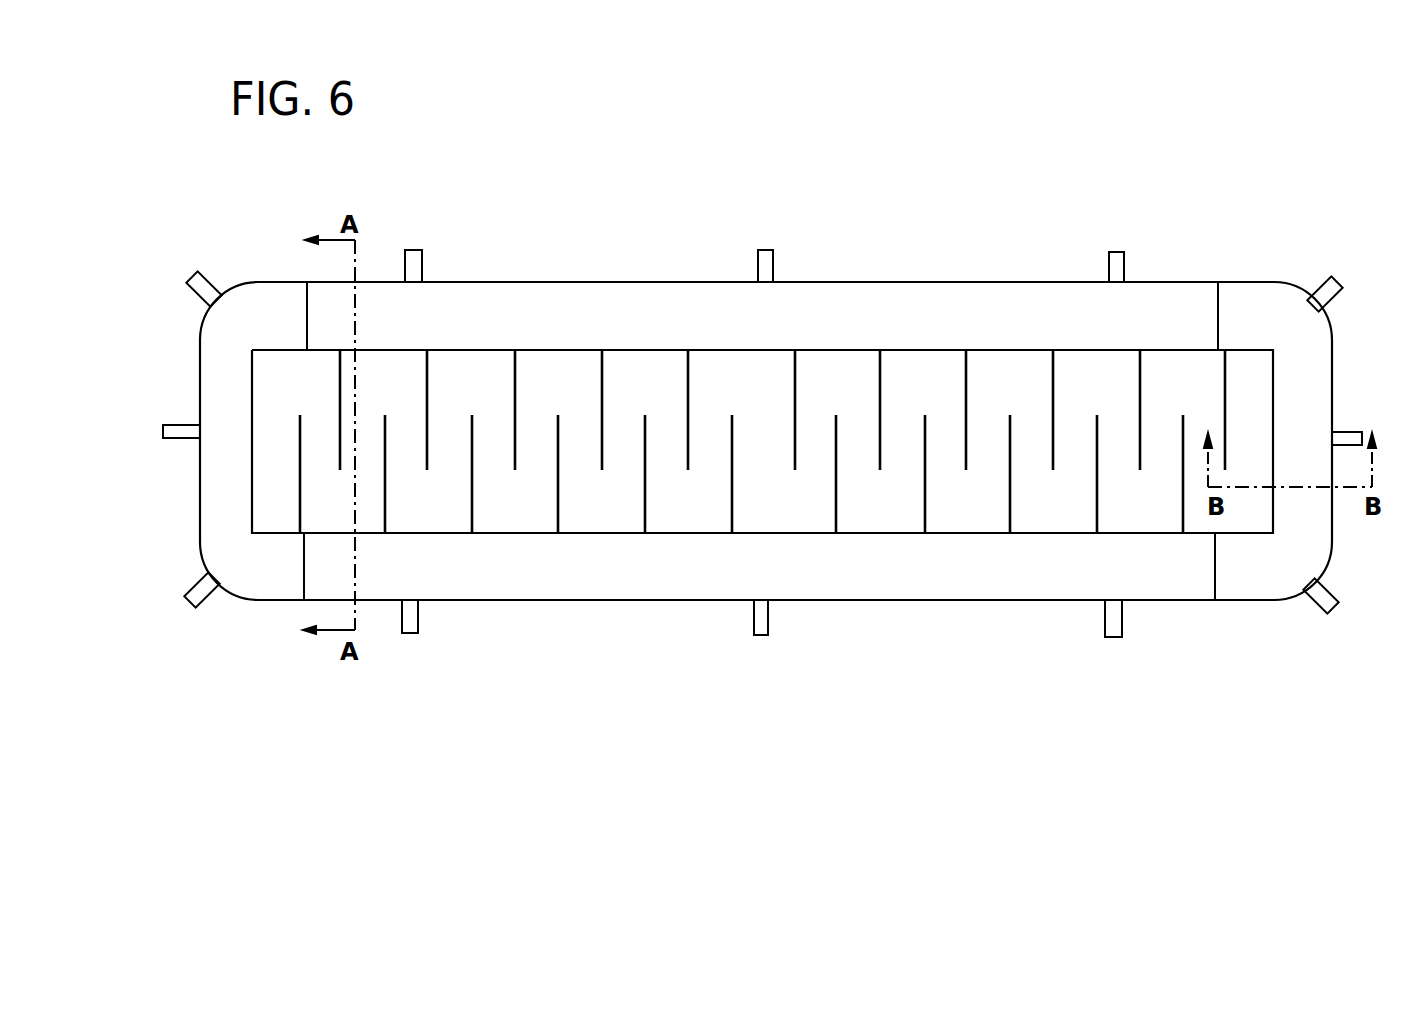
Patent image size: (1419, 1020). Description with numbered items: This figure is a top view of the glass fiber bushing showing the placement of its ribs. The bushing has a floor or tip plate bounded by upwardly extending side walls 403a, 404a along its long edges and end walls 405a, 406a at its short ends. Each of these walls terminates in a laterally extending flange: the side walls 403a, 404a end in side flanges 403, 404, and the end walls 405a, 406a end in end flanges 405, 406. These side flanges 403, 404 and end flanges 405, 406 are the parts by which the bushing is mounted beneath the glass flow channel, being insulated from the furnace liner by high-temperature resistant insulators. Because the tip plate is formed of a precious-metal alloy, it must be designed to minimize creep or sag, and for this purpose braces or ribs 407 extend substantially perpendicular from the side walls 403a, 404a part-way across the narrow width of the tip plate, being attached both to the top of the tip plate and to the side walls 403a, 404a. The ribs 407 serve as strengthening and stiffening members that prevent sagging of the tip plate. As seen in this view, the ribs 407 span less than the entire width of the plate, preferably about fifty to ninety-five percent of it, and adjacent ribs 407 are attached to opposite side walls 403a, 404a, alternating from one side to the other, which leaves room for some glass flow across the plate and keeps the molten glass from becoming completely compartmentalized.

The side flange 403 is at (597, 282).
The side wall 403a is at (1003, 350).
The side flange 404 is at (642, 600).
The side wall 404a is at (967, 533).
The end flange 405 is at (1332, 372).
The end wall 405a is at (1272, 512).
The end flange 406 is at (200, 353).
The end wall 406a is at (252, 487).
The rib 407 is at (795, 380).